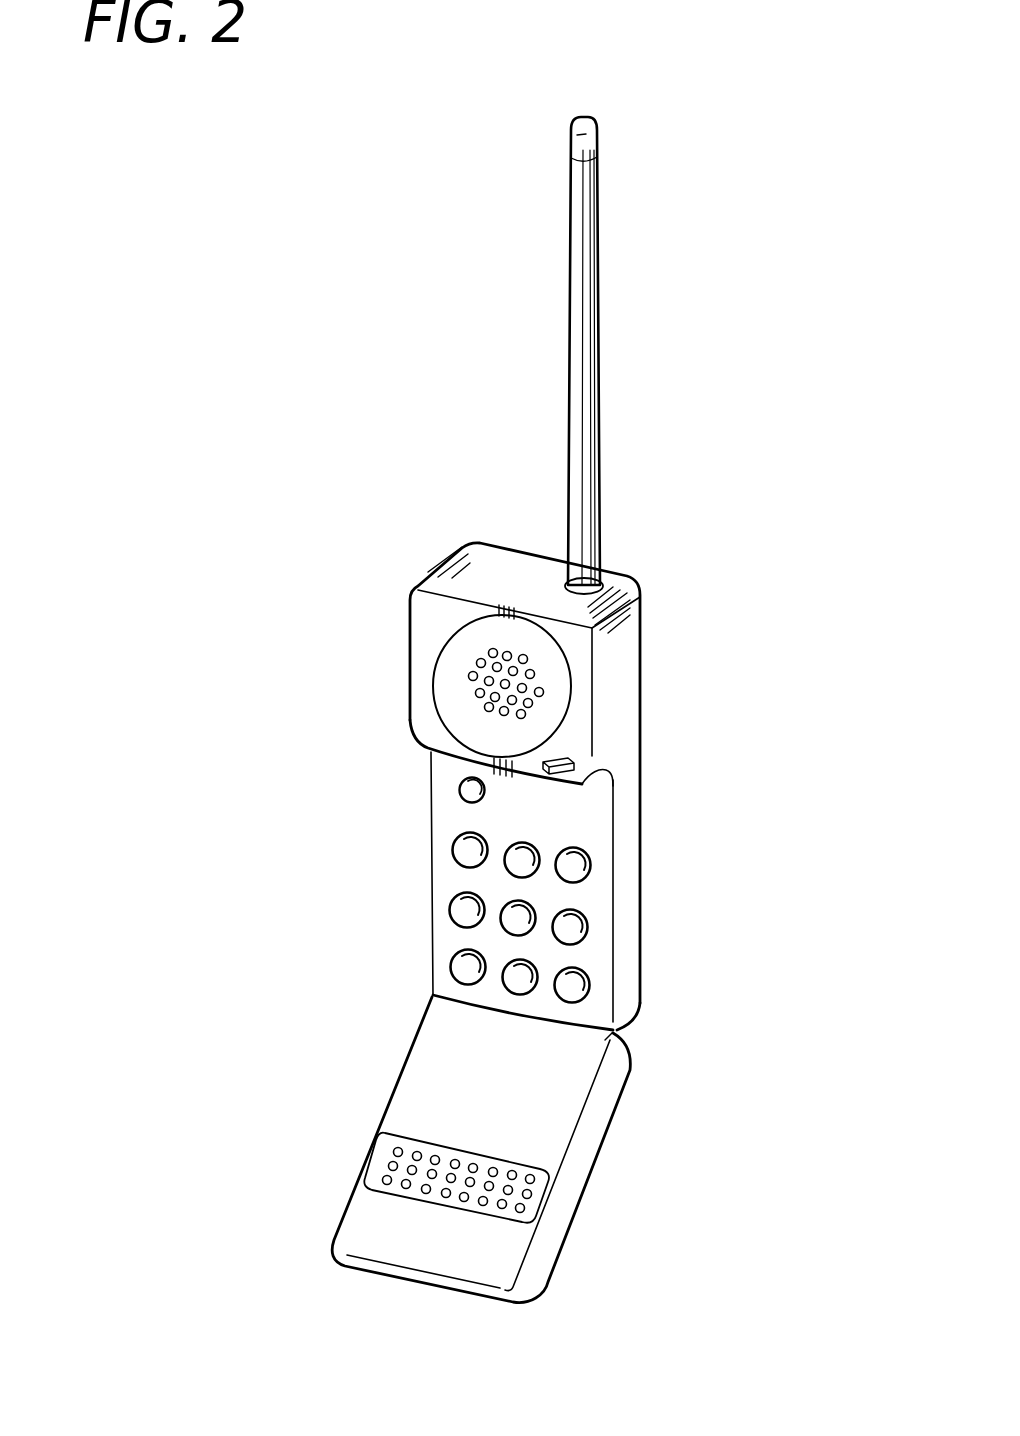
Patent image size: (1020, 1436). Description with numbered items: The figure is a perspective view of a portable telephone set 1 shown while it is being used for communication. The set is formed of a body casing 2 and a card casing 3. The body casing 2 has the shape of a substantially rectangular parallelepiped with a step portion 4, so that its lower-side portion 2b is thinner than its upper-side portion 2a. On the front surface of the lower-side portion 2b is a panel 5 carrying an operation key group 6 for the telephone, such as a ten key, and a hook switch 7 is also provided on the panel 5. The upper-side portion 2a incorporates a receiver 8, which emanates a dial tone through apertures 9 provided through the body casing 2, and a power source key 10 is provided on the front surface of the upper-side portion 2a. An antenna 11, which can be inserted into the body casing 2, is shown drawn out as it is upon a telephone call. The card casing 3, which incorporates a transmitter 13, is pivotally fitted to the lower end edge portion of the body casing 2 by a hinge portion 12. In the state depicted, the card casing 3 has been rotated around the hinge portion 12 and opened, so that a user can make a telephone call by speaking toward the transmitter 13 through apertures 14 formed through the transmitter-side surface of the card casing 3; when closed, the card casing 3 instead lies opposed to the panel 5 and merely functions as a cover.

The portable telephone set 1 is at (440, 529).
The body casing 2 is at (423, 722).
The upper-side portion 2a is at (623, 678).
The lower-side portion 2b is at (628, 887).
The card casing 3 is at (575, 1168).
The step portion 4 is at (582, 784).
The panel 5 is at (597, 823).
The operation key group 6 is at (453, 857).
The hook switch 7 is at (457, 788).
The receiver 8 is at (545, 660).
The apertures 9 is at (472, 676).
The power source key 10 is at (577, 763).
The antenna 11 is at (593, 303).
The hinge portion 12 is at (620, 1027).
The transmitter 13 is at (530, 1208).
The apertures 14 is at (390, 1163).